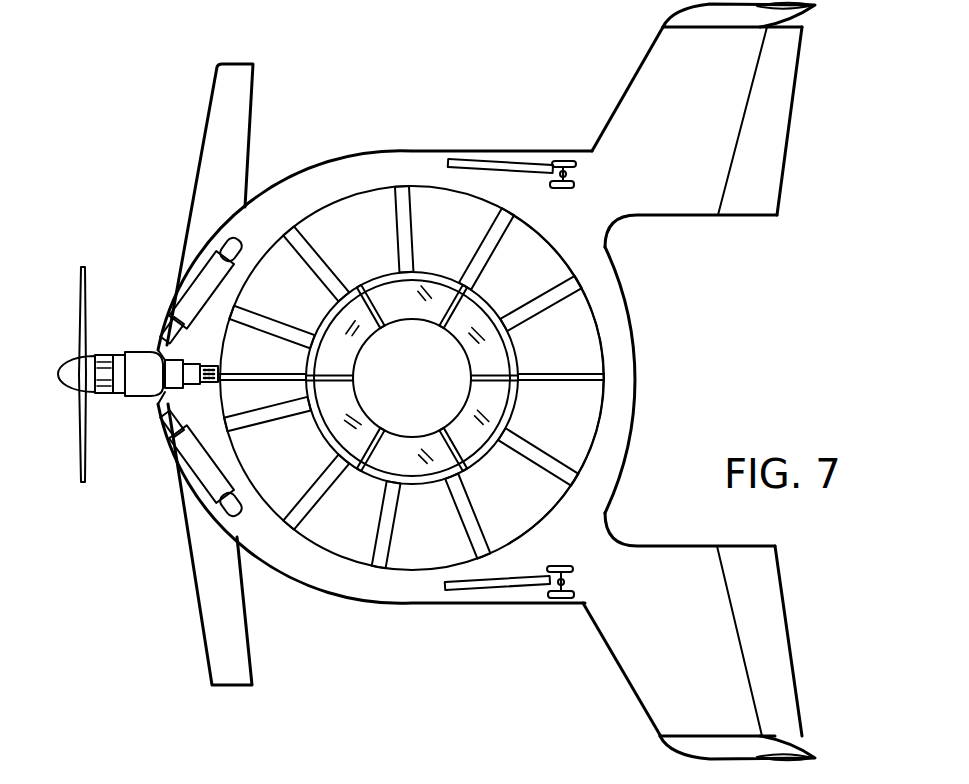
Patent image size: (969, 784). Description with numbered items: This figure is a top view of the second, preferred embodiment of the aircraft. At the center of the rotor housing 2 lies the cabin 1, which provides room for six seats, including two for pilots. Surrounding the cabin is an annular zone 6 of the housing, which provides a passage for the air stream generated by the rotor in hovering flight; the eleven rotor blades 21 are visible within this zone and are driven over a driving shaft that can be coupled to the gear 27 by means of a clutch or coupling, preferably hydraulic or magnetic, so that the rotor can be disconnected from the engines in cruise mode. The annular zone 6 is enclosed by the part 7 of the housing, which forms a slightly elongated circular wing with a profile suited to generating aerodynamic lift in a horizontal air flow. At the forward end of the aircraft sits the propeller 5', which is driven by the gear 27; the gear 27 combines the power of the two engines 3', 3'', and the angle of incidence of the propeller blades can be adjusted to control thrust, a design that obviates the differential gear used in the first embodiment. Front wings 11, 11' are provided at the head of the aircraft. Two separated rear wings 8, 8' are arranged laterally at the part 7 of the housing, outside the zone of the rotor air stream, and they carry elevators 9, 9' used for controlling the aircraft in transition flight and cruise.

The cabin 1 is at (424, 396).
The rotor housing 2 is at (447, 148).
The annular zone 6 is at (367, 218).
The part of the housing forming a circular wing 7 is at (323, 187).
The rotor blades 21 is at (568, 288).
The engine 3' is at (193, 285).
The engine 3'' is at (192, 464).
The propeller 5' is at (107, 374).
The gear 27 is at (140, 373).
The front wing 11 is at (201, 204).
The front wing 11' is at (240, 544).
The rear wing 8 is at (703, 124).
The rear wing 8' is at (686, 636).
The elevator 9 is at (769, 121).
The elevator 9' is at (781, 641).